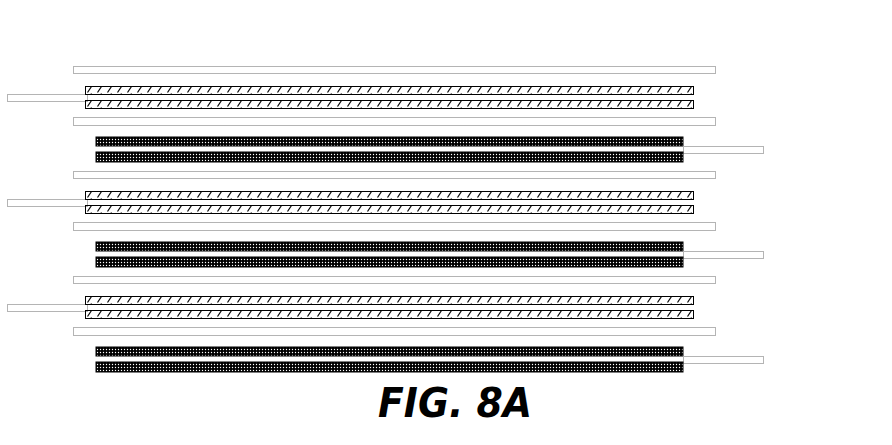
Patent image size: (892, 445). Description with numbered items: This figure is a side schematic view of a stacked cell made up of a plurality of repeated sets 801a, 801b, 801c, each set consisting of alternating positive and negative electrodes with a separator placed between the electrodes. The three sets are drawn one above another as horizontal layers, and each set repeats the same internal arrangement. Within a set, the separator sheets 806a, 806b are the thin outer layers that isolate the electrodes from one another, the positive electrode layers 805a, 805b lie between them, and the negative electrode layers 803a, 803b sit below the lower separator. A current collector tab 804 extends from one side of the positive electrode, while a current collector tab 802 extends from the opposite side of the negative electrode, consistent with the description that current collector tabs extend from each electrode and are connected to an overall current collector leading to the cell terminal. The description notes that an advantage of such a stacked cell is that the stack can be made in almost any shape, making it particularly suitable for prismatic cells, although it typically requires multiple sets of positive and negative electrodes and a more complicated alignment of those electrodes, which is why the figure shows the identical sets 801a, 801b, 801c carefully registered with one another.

The set of electrodes and separator 801a is at (779, 66).
The set of electrodes and separator 801b is at (779, 170).
The set of electrodes and separator 801c is at (779, 275).
The negative electrode current collector tab 802 is at (736, 146).
The negative electrode active material layer 803a is at (630, 140).
The negative electrode active material layer 803b is at (542, 158).
The positive electrode current collector tab 804 is at (38, 95).
The positive electrode active material layer 805a is at (135, 105).
The positive electrode active material layer 805b is at (228, 88).
The separator 806a is at (458, 72).
The separator 806b is at (392, 118).